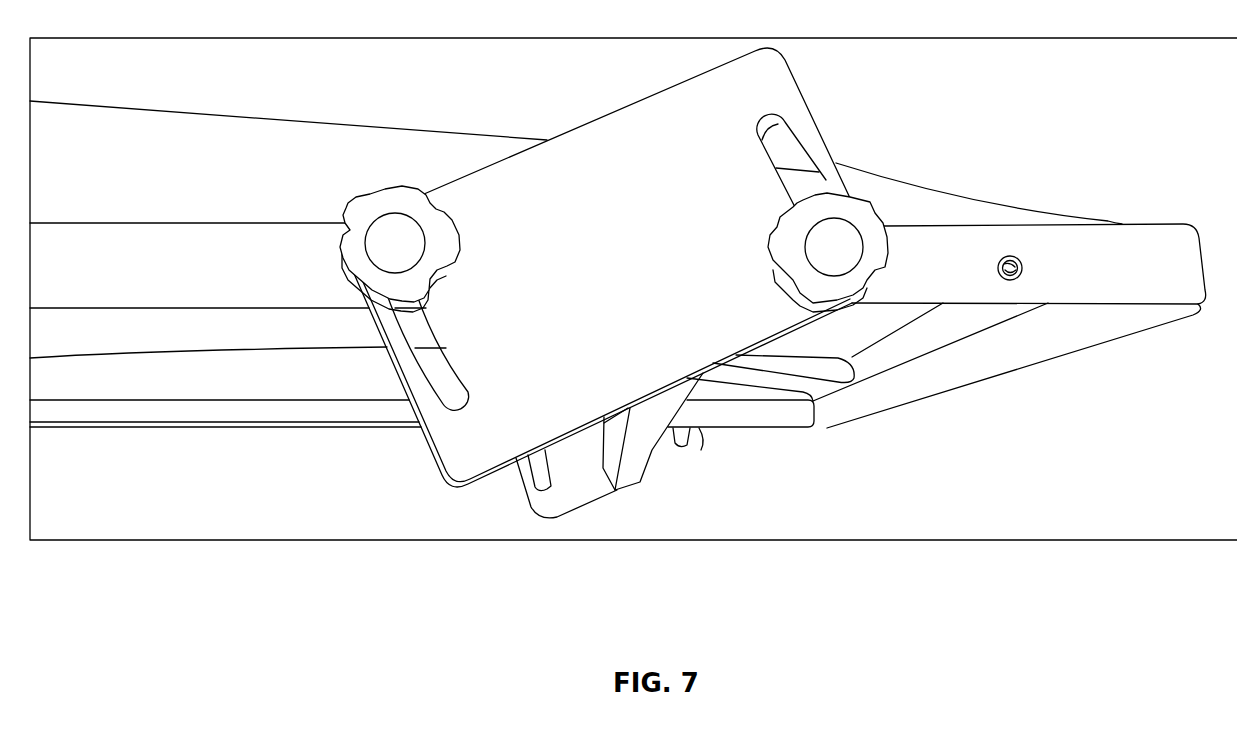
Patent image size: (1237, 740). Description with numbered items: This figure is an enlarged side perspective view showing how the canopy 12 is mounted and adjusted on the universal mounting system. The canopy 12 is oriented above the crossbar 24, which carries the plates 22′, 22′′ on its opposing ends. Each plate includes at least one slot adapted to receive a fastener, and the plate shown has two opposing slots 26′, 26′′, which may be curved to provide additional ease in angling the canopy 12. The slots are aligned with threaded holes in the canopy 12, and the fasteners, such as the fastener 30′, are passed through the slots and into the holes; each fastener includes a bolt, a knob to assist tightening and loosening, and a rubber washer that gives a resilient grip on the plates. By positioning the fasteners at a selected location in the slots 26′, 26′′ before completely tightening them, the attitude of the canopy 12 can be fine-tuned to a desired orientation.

The canopy 12 is at (165, 106).
The plate 22′ is at (612, 128).
The plate 22′′ is at (577, 472).
The crossbar 24 is at (640, 452).
The slot 26′ is at (430, 362).
The slot 26′′ is at (773, 140).
The fastener 30′ is at (398, 233).